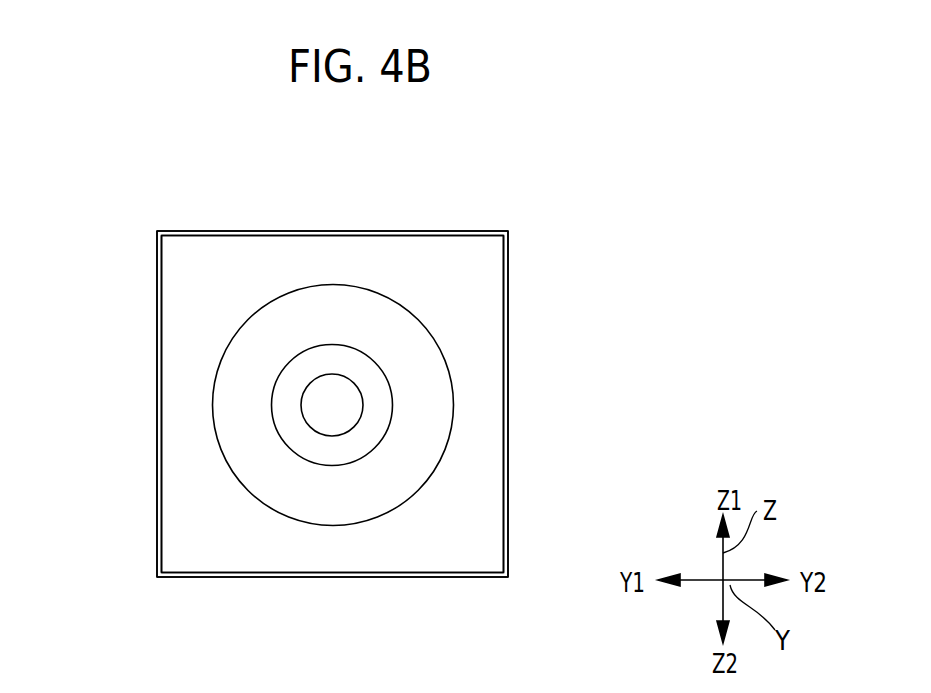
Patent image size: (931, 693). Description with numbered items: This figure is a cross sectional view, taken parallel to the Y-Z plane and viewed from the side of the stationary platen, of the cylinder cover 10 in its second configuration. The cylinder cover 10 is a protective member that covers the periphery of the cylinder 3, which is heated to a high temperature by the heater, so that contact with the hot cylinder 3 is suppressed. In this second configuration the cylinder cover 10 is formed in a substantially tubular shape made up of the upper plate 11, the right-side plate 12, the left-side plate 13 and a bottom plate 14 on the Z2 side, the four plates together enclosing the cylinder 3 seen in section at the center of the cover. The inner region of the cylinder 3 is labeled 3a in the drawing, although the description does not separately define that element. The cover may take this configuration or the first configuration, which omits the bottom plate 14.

The cylinder cover 10 is at (550, 203).
The upper plate 11 is at (322, 230).
The right-side plate 12 is at (157, 392).
The left-side plate 13 is at (508, 393).
The bottom plate 14 is at (320, 577).
The cylinder 3 is at (258, 498).
The coil opening 3a is at (340, 437).